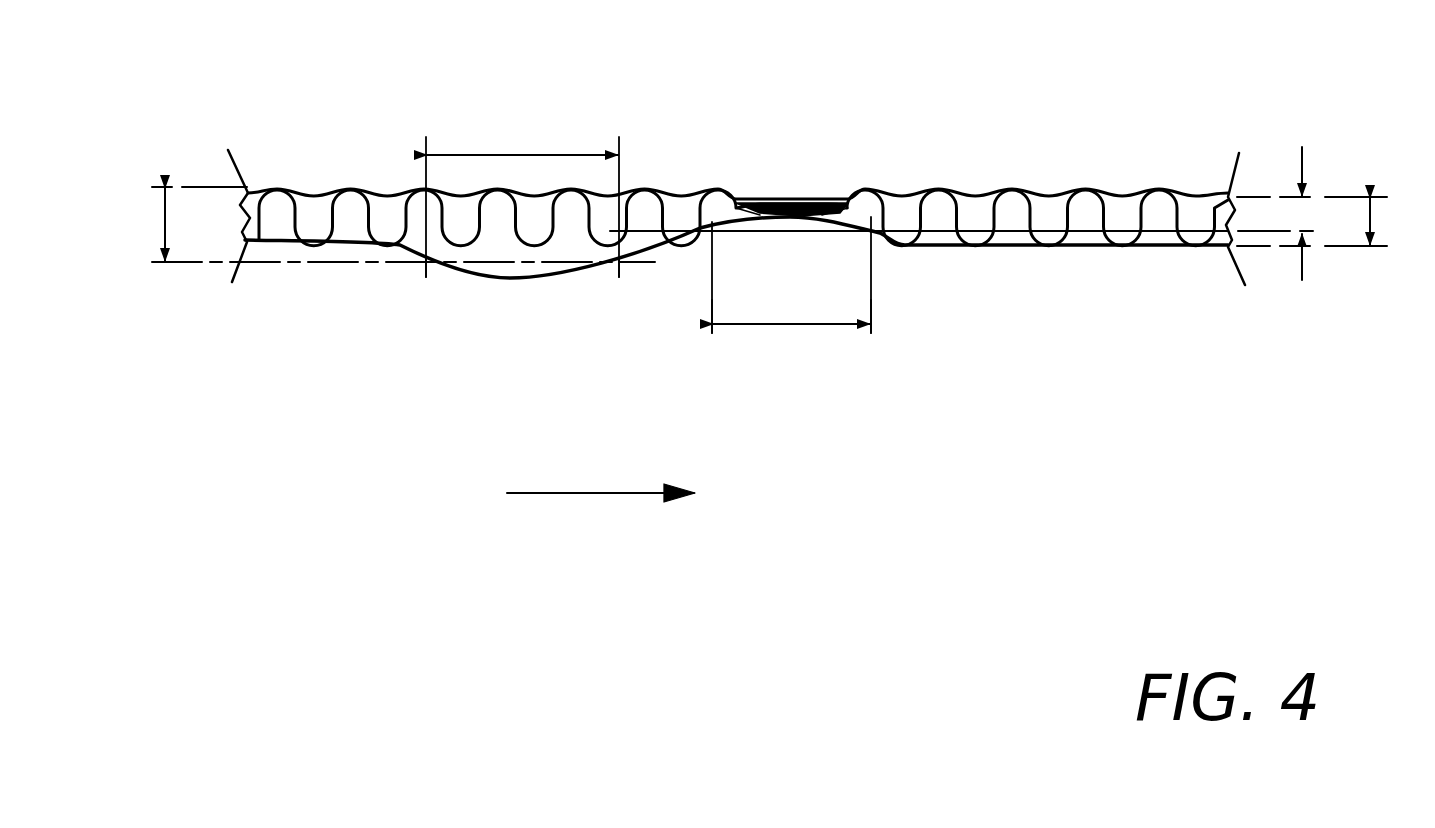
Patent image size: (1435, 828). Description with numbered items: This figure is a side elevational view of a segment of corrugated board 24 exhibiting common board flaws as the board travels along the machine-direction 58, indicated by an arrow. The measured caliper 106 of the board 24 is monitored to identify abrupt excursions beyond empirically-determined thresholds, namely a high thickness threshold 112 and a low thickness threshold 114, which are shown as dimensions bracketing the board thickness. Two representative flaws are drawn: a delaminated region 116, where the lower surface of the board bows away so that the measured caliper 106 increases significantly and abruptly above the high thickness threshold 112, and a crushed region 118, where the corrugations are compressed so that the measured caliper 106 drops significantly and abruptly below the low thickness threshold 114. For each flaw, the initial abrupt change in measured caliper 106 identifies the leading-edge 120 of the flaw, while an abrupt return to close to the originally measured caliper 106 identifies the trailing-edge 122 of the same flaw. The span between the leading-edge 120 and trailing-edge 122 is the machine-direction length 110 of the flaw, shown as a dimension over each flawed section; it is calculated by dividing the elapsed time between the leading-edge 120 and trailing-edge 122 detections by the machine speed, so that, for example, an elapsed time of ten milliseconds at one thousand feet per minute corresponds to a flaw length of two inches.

The board 24 is at (982, 222).
The machine-direction 58 is at (568, 495).
The measured caliper 106 is at (1373, 225).
The machine-direction length 110 is at (530, 155).
The high thickness threshold 112 is at (163, 231).
The low thickness threshold 114 is at (1302, 157).
The delaminated region 116 is at (525, 282).
The crushed region 118 is at (786, 205).
The leading-edge 120 is at (619, 280).
The trailing-edge 122 is at (426, 280).